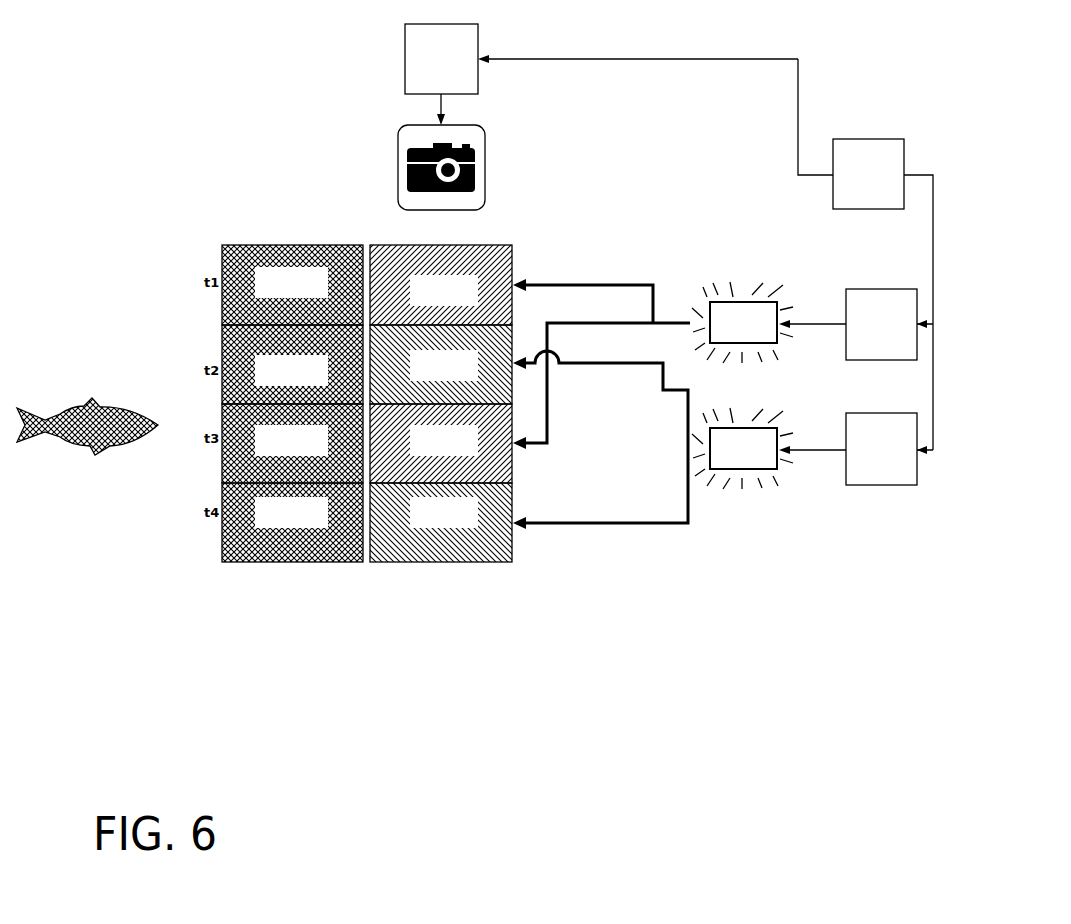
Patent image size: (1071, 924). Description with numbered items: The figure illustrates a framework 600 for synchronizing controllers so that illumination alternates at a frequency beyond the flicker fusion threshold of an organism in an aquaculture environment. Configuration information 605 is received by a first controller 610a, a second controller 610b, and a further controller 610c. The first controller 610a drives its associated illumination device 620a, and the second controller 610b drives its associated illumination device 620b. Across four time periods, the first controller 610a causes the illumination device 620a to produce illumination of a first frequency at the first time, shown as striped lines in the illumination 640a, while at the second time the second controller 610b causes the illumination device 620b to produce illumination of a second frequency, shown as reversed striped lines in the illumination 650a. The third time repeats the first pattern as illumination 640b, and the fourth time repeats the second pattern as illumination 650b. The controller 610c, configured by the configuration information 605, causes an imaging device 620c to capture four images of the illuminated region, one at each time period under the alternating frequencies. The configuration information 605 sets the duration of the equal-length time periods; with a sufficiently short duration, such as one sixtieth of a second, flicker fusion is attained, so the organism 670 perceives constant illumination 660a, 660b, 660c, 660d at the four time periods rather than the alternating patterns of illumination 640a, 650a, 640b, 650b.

The framework 600 is at (89, 162).
The configuration information 605 is at (855, 183).
The first controller 610a is at (863, 333).
The second controller 610b is at (863, 459).
The controller 610c is at (423, 68).
The illumination device 620a is at (719, 274).
The illumination device 620b is at (766, 496).
The imaging device 620c is at (392, 161).
The illumination 640a is at (425, 300).
The illumination 640b is at (425, 450).
The illumination 650a is at (425, 375).
The illumination 650b is at (425, 521).
The perceived illumination 660a is at (273, 292).
The perceived illumination 660b is at (273, 379).
The perceived illumination 660c is at (273, 449).
The perceived illumination 660d is at (273, 521).
The organism 670 is at (93, 474).